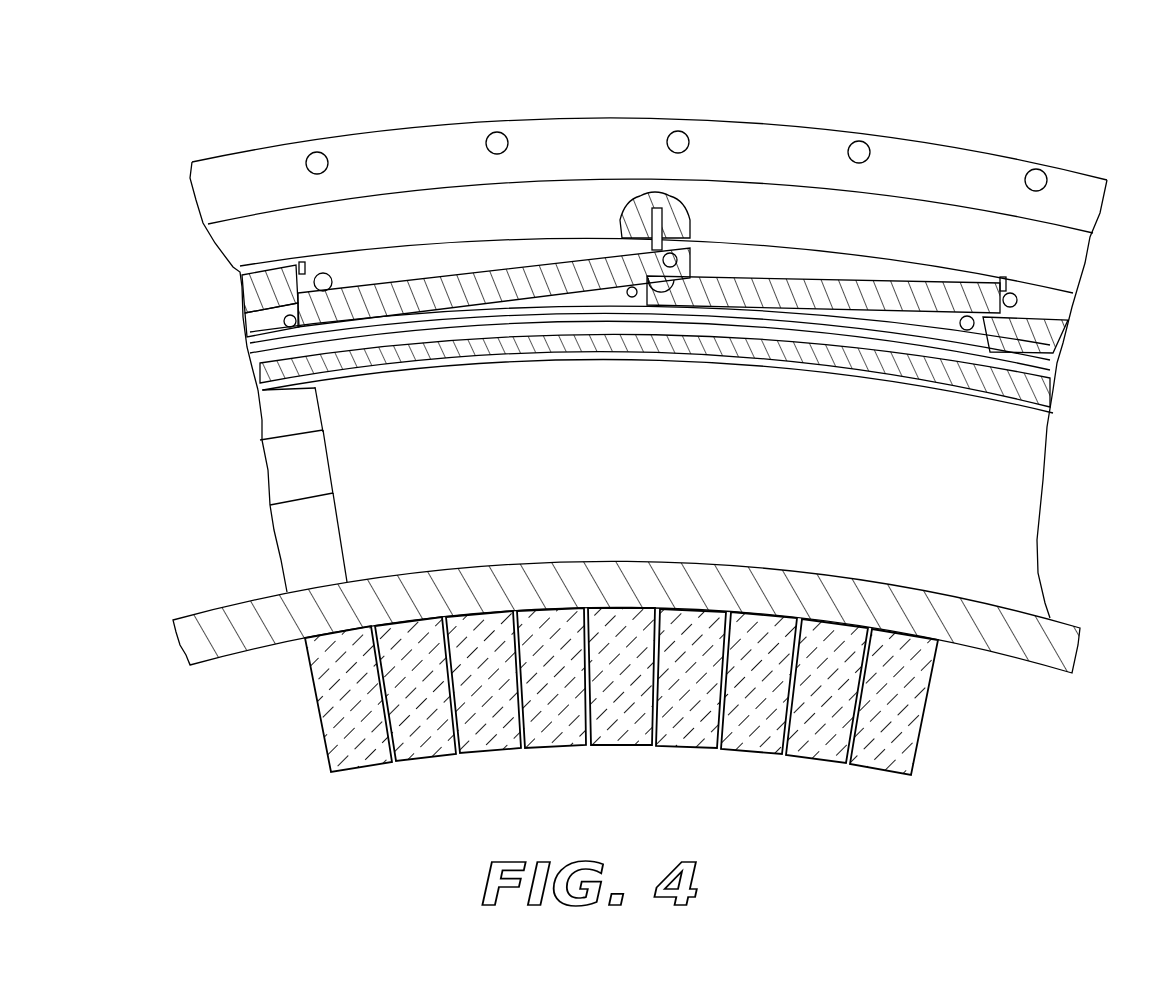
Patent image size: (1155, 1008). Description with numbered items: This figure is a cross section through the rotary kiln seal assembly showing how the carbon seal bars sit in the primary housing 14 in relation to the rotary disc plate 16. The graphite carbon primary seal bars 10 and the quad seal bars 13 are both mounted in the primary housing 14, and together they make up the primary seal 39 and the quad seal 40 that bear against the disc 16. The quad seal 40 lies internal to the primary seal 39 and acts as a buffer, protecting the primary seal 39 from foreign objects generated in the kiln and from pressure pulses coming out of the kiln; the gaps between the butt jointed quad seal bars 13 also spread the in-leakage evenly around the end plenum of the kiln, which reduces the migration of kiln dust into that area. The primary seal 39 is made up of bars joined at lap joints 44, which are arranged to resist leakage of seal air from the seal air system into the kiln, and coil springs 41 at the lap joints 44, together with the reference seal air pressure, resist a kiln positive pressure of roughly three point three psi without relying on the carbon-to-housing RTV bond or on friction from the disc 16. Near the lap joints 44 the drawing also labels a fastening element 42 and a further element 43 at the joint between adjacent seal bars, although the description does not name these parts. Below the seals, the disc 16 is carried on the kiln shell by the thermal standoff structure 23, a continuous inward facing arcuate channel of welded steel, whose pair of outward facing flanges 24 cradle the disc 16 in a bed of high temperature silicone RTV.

The primary housing 14 is at (607, 117).
The primary seal bars 10 is at (410, 283).
The coil springs 41 is at (632, 206).
The bolt 42 is at (680, 273).
The lap joints 44 is at (683, 279).
The pin 43 is at (628, 294).
The primary seal 39 is at (1080, 290).
The quad seal bars 13 is at (848, 360).
The quad seal 40 is at (1078, 375).
The rotary disc plate 16 is at (306, 413).
The outward facing flanges 24 is at (306, 465).
The thermal standoff structure 23 is at (315, 537).